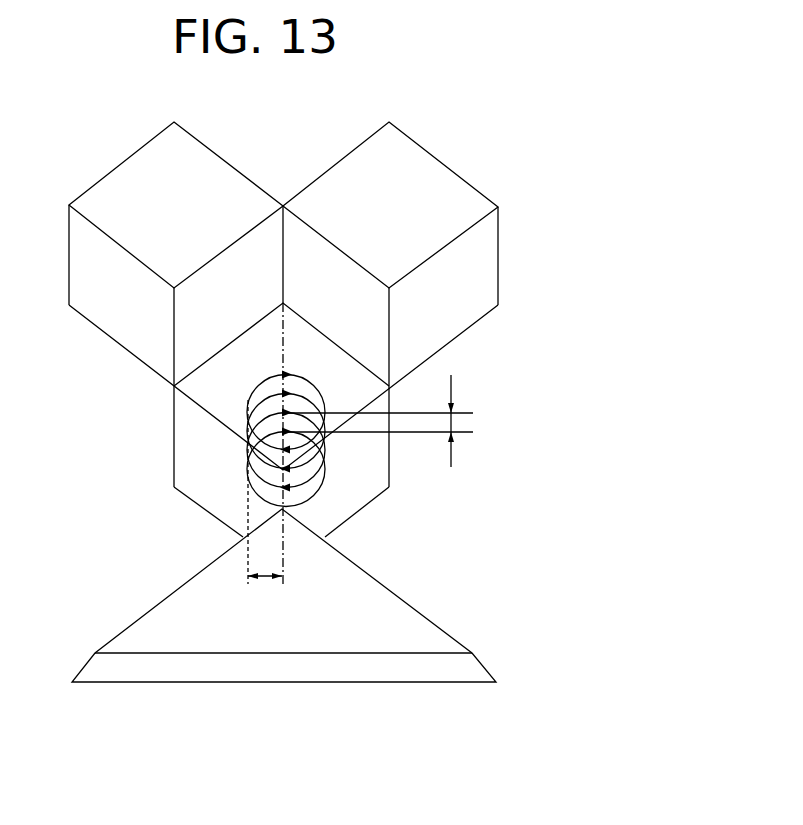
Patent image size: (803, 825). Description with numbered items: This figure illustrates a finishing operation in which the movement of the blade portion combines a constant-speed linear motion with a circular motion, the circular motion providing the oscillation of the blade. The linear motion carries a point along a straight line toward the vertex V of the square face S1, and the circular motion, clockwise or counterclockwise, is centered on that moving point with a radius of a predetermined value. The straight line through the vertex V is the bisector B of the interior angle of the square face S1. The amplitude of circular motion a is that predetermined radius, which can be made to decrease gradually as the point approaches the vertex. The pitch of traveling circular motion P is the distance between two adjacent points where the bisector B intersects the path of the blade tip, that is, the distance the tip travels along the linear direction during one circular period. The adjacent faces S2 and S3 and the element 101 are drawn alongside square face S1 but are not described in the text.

The square face S1 is at (232, 413).
The second surface (left cube) S2 is at (242, 262).
The third surface (right cube) S3 is at (333, 262).
The vertex V is at (283, 305).
The bisector B is at (283, 363).
The pitch of traveling circular motion P is at (451, 421).
The amplitude of circular motion a is at (263, 577).
The base plate 101 is at (372, 636).